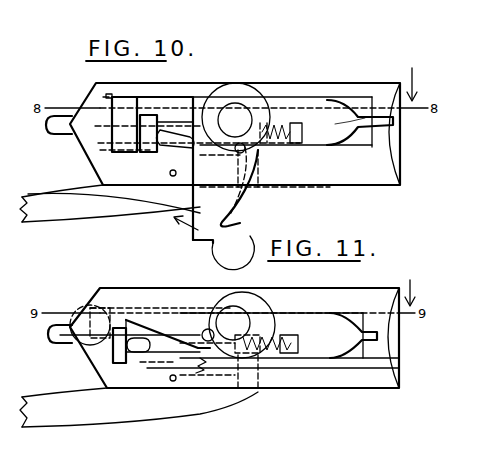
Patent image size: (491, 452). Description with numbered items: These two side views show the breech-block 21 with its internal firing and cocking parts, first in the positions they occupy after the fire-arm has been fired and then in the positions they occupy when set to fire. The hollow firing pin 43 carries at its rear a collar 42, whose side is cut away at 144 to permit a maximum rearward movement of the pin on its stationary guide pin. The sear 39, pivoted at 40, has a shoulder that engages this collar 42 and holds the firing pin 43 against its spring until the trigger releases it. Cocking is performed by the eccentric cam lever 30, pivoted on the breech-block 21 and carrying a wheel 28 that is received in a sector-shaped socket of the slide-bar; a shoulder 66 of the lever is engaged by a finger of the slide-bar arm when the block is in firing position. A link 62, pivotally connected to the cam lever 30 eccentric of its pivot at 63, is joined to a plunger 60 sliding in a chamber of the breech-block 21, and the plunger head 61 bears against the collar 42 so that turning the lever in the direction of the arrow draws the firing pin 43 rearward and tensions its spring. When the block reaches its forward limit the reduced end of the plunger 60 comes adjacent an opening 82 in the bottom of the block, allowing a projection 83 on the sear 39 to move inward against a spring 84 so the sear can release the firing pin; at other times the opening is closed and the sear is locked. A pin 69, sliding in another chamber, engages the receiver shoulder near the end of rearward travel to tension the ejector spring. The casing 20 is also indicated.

In FIG. 11, the casing 20 is at (126, 317).
In FIG. 10, the breech-block 21 is at (235, 147).
In FIG. 11, the breech-block 21 is at (229, 351).
In FIG. 10, the wheel 28 is at (233, 253).
In FIG. 11, the wheel 28 is at (87, 337).
In FIG. 10, the eccentric cam lever 30 is at (236, 155).
In FIG. 11, the eccentric cam lever 30 is at (200, 327).
In FIG. 10, the sear 39 is at (100, 210).
In FIG. 11, the sear 39 is at (139, 407).
In FIG. 10, the sear pivot 40 is at (172, 177).
In FIG. 11, the sear pivot 40 is at (172, 382).
In FIG. 10, the collar 42 is at (118, 122).
In FIG. 10, the firing pin 43 is at (355, 122).
In FIG. 11, the firing pin 43 is at (353, 335).
In FIG. 10, the plunger 60 is at (180, 127).
In FIG. 10, the plunger head 61 is at (147, 150).
In FIG. 11, the plunger head 61 is at (115, 340).
In FIG. 10, the link 62 is at (168, 142).
In FIG. 11, the link 62 is at (158, 345).
In FIG. 10, the link pivot 63 is at (260, 148).
In FIG. 11, the link pivot 63 is at (266, 344).
In FIG. 10, the shoulder 66 is at (210, 245).
In FIG. 10, the pin 69 is at (56, 131).
In FIG. 10, the opening 82 is at (277, 187).
In FIG. 11, the opening 82 is at (268, 388).
In FIG. 10, the projection 83 is at (253, 195).
In FIG. 11, the projection 83 is at (252, 392).
In FIG. 11, the spring 84 is at (200, 372).
In FIG. 10, the cut-away 144 is at (107, 97).